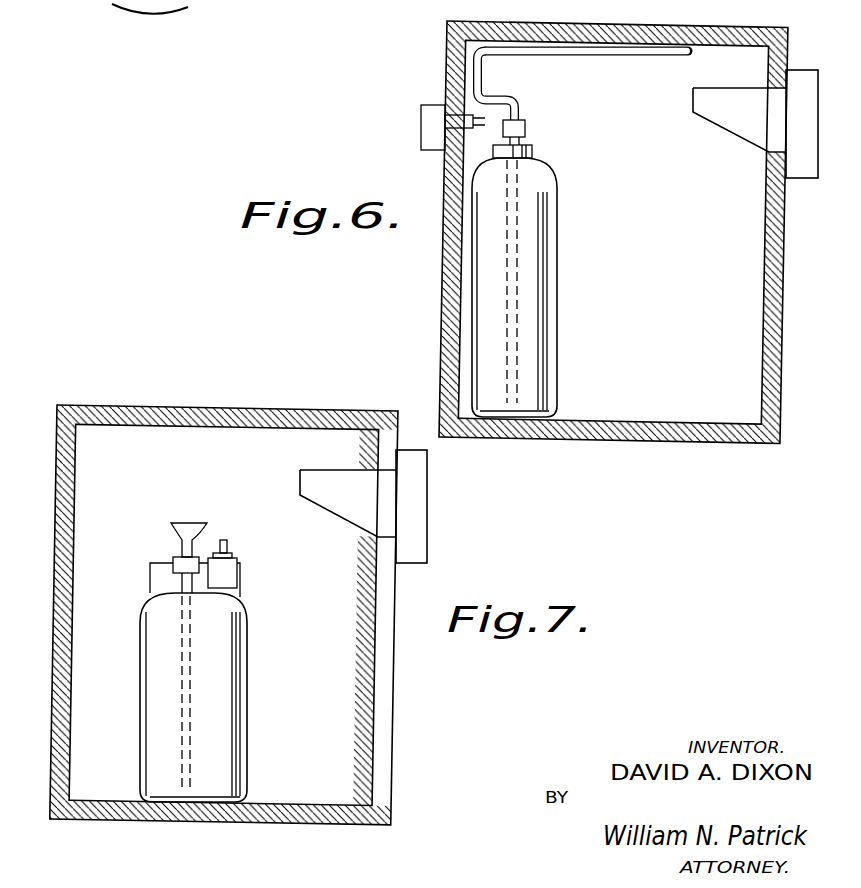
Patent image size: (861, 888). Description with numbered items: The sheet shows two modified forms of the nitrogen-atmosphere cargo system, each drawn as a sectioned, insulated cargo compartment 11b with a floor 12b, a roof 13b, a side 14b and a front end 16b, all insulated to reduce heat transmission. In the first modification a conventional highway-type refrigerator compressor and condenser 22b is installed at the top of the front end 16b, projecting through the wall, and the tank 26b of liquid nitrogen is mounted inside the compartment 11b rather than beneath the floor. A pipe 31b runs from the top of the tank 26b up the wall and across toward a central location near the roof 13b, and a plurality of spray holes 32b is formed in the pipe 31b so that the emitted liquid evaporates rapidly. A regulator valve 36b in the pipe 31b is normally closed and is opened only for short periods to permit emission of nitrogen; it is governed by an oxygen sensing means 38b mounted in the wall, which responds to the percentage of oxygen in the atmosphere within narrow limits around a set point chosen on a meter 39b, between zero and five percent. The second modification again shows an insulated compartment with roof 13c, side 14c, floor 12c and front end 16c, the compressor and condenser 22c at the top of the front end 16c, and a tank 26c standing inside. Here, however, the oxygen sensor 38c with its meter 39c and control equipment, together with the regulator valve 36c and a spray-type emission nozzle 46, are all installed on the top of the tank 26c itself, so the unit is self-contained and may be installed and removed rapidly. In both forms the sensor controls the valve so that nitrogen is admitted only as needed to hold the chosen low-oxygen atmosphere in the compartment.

In FIG. 6, the cargo compartment 11b is at (723, 260).
In FIG. 6, the floor 12b is at (653, 435).
In FIG. 6, the roof 13b is at (742, 43).
In FIG. 6, the side 14b is at (452, 288).
In FIG. 6, the front end 16b is at (778, 338).
In FIG. 6, the compressor and condenser 22b is at (742, 127).
In FIG. 6, the tank 26b is at (537, 323).
In FIG. 6, the pipe 31b is at (482, 82).
In FIG. 6, the spray holes 32b is at (658, 53).
In FIG. 6, the regulator valve 36b is at (522, 128).
In FIG. 6, the oxygen sensing means 38b is at (447, 123).
In FIG. 6, the meter 39b is at (430, 115).
In FIG. 7, the roof 13c is at (247, 405).
In FIG. 7, the side 14c is at (60, 670).
In FIG. 7, the floor 12c is at (315, 817).
In FIG. 7, the front end 16c is at (385, 710).
In FIG. 7, the compressor and condenser 22c is at (345, 512).
In FIG. 7, the tank 26c is at (230, 755).
In FIG. 7, the regulator valve 36c is at (173, 560).
In FIG. 7, the oxygen sensor 38c is at (225, 543).
In FIG. 7, the meter 39c is at (223, 578).
In FIG. 7, the emission nozzle 46 is at (185, 522).